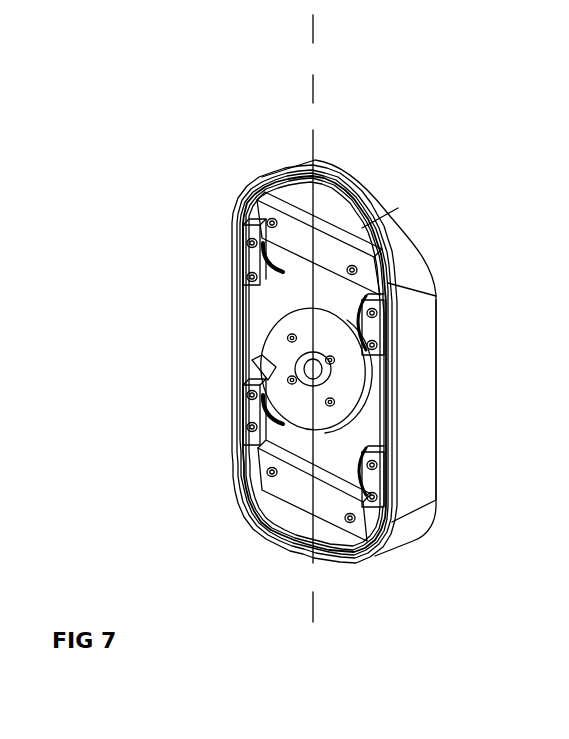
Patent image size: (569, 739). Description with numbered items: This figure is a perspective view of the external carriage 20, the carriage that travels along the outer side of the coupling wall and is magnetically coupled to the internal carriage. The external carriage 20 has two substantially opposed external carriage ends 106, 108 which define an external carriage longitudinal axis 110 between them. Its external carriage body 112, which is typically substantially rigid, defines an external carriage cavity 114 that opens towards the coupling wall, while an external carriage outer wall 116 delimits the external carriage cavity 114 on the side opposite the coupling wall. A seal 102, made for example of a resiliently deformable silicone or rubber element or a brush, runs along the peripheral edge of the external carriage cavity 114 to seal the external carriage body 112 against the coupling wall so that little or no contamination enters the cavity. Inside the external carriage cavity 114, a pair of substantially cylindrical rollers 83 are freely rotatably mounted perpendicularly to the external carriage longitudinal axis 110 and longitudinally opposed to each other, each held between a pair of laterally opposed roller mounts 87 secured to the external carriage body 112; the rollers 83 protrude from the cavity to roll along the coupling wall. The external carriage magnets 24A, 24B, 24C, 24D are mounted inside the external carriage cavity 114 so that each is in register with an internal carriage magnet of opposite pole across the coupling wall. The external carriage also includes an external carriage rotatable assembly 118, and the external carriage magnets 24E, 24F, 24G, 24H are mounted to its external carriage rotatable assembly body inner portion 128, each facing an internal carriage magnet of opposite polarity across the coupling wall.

The external carriage 20 is at (118, 124).
The seal 102 is at (343, 217).
The external carriage end 106 is at (337, 179).
The external carriage end 108 is at (371, 562).
The external carriage longitudinal axis 110 is at (307, 611).
The external carriage body 112 is at (262, 175).
The external carriage cavity 114 is at (268, 336).
The external carriage outer wall 116 is at (436, 368).
The external carriage rotatable assembly 118 is at (292, 297).
The external carriage rotatable assembly body inner portion 128 is at (377, 393).
The external carriage magnet 24A is at (268, 237).
The external carriage magnet 24B is at (388, 273).
The external carriage magnet 24C is at (260, 462).
The external carriage magnet 24D is at (343, 517).
The external carriage magnet 24E is at (262, 323).
The external carriage magnet 24F is at (330, 342).
The external carriage magnet 24G is at (333, 420).
The external carriage magnet 24H is at (262, 370).
The roller 83 is at (246, 278).
The roller mount 87 is at (247, 412).